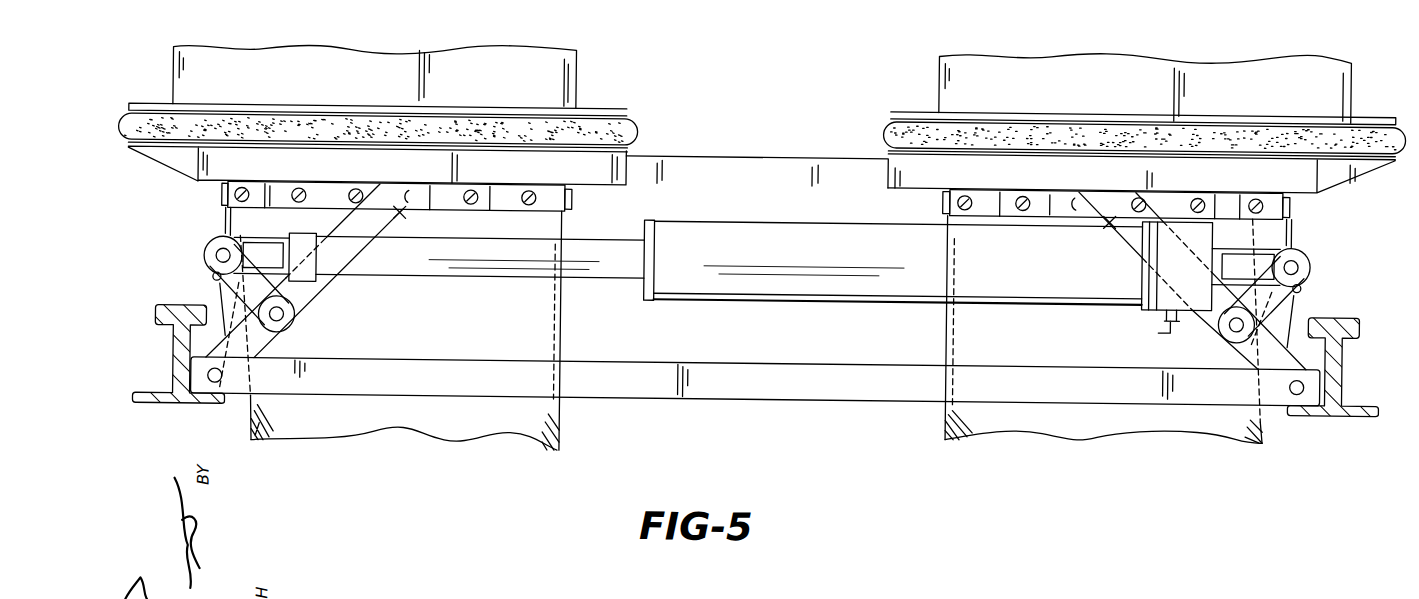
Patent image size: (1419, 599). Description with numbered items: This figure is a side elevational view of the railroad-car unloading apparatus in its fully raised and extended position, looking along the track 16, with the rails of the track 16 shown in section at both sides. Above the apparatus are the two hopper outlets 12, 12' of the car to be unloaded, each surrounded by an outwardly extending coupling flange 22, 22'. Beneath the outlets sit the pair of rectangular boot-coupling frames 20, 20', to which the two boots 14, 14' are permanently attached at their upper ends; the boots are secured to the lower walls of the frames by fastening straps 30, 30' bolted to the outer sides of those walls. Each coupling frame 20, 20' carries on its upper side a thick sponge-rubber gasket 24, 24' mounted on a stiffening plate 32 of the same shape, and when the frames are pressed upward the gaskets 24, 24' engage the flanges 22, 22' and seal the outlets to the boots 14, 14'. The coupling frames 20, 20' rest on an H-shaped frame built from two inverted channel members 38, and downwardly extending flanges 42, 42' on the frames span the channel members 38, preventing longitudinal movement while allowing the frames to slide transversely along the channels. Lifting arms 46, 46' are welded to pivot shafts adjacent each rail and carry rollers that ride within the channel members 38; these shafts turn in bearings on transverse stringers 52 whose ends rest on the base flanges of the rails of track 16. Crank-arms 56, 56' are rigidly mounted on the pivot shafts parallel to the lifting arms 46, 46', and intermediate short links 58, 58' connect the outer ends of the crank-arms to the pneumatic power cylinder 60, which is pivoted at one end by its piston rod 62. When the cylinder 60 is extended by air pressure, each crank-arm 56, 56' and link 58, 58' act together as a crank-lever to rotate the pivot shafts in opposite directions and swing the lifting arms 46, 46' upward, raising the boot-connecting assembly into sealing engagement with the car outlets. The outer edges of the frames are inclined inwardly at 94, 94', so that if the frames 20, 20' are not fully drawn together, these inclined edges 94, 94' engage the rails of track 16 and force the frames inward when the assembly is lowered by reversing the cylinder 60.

The hopper outlet 12 is at (403, 64).
The hopper outlet 12' is at (1120, 86).
The coupling flange 22 is at (394, 89).
The coupling flange 22' is at (1127, 100).
The spongy gasket 24 is at (400, 122).
The spongy gasket 24' is at (1117, 132).
The stiffening plate 32 is at (178, 147).
The inclined edge 94 is at (163, 198).
The inclined edge 94' is at (1373, 196).
The boot-coupling frame 20 is at (202, 209).
The boot-coupling frame 20' is at (1320, 221).
The downwardly extending flange 42 is at (332, 164).
The downwardly extending flange 42' is at (1141, 172).
The inverted channel member 38 is at (750, 154).
The fastening strap 30 is at (396, 208).
The fastening strap 30' is at (1088, 207).
The piston rod 62 is at (468, 259).
The intermediate short link 58 is at (222, 312).
The intermediate short link 58' is at (1286, 298).
The pneumatic power cylinder 60 is at (826, 254).
The lifting arm 46 is at (332, 271).
The lifting arm 46' is at (1177, 281).
The crank-arm 56 is at (272, 299).
The crank-arm 56' is at (1261, 369).
The transverse stringer 52 is at (792, 386).
The track 16 is at (177, 347).
The boot 14 is at (400, 328).
The boot 14' is at (1105, 330).